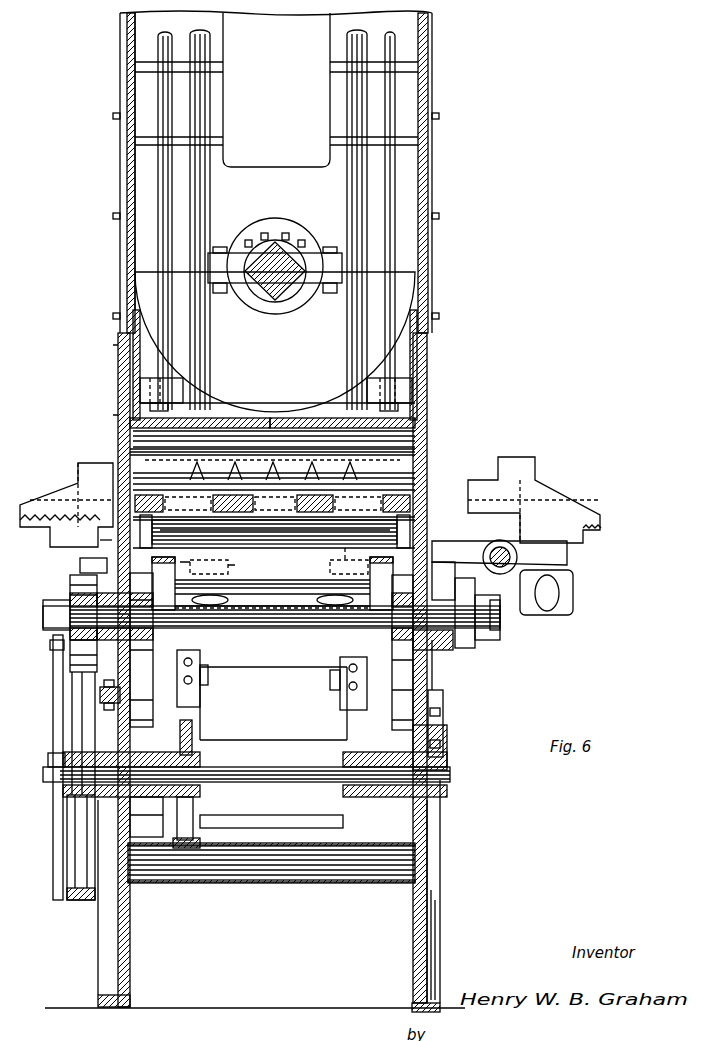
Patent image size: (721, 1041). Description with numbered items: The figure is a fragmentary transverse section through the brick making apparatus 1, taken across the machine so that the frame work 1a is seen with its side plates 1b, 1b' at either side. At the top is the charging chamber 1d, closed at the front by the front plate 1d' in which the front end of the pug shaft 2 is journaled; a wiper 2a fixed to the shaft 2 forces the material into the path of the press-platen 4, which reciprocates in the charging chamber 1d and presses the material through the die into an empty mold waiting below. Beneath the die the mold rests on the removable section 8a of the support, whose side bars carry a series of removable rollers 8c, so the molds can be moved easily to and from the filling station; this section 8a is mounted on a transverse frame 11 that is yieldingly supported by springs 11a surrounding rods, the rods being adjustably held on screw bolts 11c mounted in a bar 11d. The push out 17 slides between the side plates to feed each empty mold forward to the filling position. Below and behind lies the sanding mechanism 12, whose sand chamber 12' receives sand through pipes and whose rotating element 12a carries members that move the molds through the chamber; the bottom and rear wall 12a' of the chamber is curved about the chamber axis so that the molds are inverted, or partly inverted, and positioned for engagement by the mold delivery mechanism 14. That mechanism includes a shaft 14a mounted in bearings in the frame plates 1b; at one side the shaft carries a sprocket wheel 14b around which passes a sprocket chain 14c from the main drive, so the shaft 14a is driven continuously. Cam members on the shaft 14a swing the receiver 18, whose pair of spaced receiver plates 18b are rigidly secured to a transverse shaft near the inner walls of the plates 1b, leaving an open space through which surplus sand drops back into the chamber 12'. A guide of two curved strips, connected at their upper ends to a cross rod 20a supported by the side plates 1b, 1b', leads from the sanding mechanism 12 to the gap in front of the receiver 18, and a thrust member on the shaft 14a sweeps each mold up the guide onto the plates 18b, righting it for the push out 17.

The brick making apparatus 1 is at (120, 168).
The frame work 1a is at (118, 400).
The upper side plate 1b is at (462, 666).
The lower side plate 1b' is at (452, 863).
The charging chamber 1d is at (440, 300).
The front plate 1d' is at (276, 116).
The pug shaft 2 is at (275, 275).
The wiper 2a is at (275, 342).
The press-platen 4 is at (400, 393).
The removable section 8a is at (296, 532).
The removable rollers 8c is at (258, 532).
The transverse frame 11 is at (240, 540).
The springs 11a is at (228, 600).
The screw bolts 11c is at (208, 680).
The bar 11d is at (232, 649).
The sanding mechanism 12 is at (246, 732).
The rotating element 12a is at (236, 784).
The sand chamber 12' is at (271, 879).
The bottom and rear wall 12a' is at (207, 777).
The mold delivery mechanism 14 is at (271, 630).
The shaft 14a is at (272, 630).
The sprocket wheel 14b is at (470, 672).
The sprocket chain 14c is at (480, 680).
The push out 17 is at (420, 500).
The receiver 18 is at (345, 566).
The receiver plates 18b is at (228, 567).
The cross rod 20a is at (288, 582).